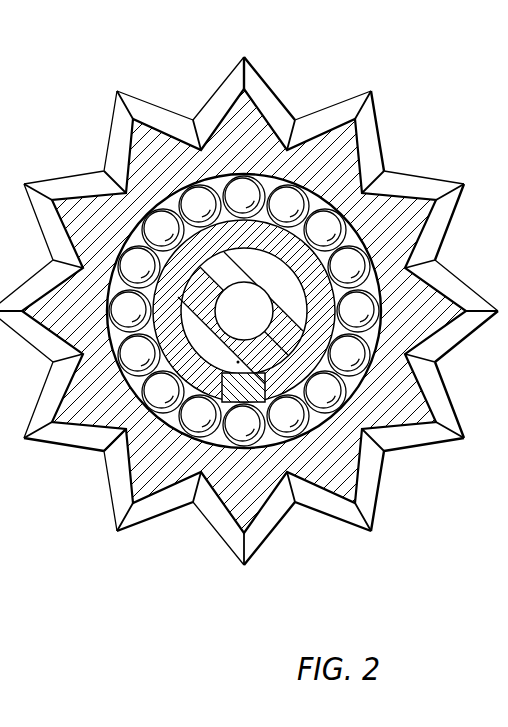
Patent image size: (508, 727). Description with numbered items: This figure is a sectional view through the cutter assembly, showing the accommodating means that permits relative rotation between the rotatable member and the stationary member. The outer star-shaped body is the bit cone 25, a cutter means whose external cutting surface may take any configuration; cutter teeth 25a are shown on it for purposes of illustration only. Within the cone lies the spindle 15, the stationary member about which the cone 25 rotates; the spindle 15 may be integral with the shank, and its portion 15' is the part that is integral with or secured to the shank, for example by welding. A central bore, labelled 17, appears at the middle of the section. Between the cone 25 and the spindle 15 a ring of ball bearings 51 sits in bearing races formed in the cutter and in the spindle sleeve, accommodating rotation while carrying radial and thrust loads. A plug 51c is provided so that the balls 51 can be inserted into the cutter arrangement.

The spindle 15 is at (249, 311).
The portion of the spindle 15' is at (83, 467).
The shaft 17 is at (254, 319).
The bit cone 25 is at (155, 137).
The cutter teeth 25a is at (230, 100).
The ball bearings 51 is at (252, 183).
The plug 51c is at (203, 340).